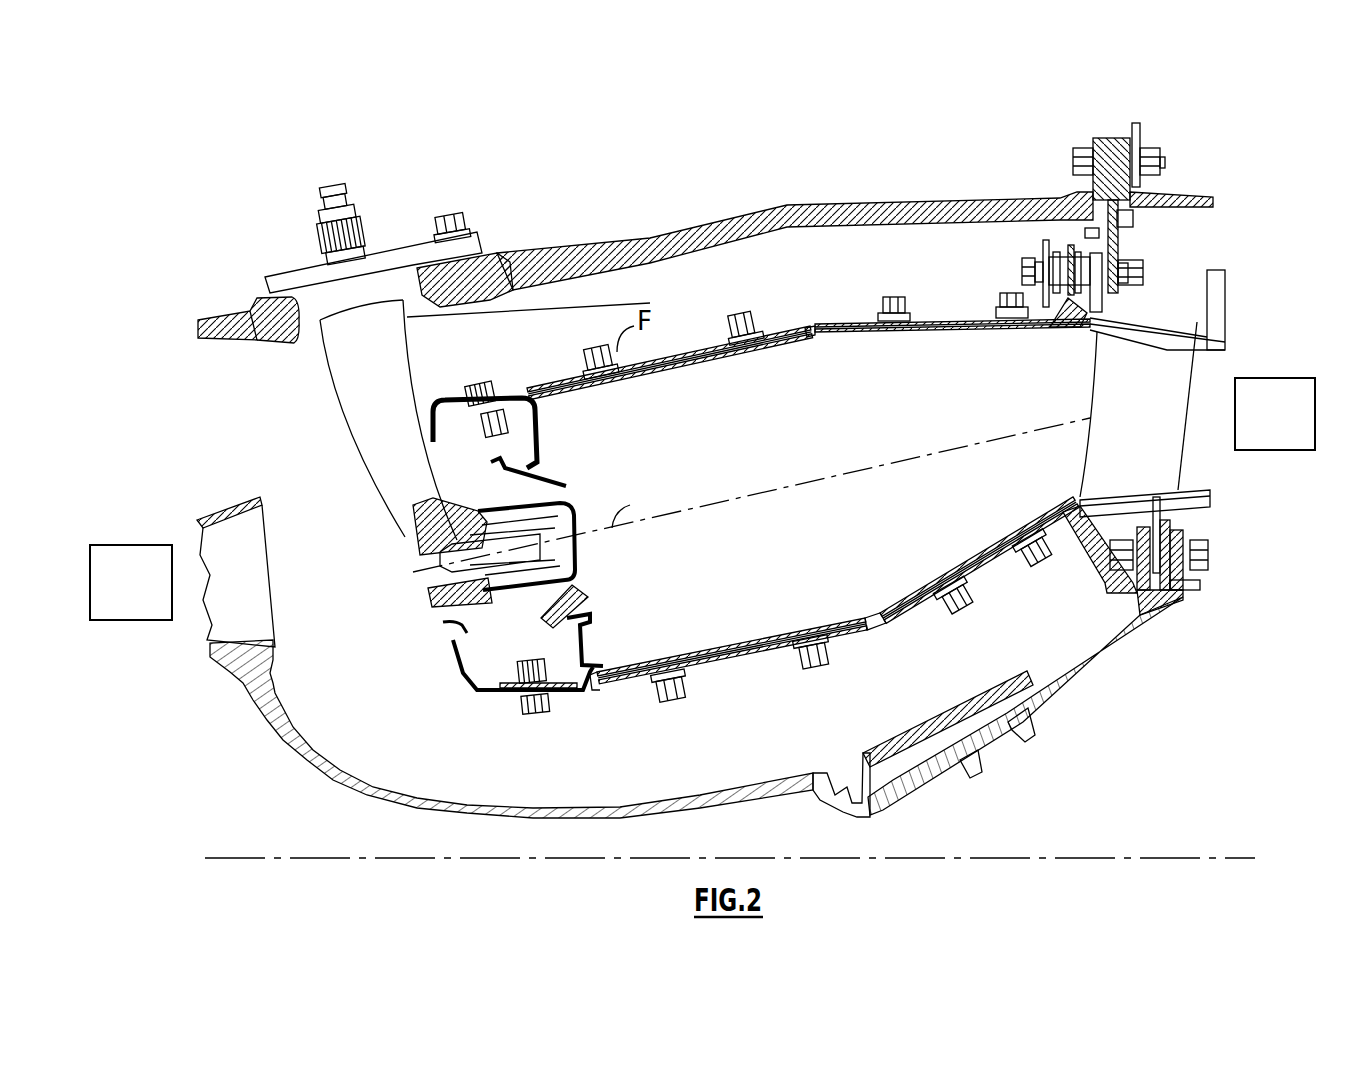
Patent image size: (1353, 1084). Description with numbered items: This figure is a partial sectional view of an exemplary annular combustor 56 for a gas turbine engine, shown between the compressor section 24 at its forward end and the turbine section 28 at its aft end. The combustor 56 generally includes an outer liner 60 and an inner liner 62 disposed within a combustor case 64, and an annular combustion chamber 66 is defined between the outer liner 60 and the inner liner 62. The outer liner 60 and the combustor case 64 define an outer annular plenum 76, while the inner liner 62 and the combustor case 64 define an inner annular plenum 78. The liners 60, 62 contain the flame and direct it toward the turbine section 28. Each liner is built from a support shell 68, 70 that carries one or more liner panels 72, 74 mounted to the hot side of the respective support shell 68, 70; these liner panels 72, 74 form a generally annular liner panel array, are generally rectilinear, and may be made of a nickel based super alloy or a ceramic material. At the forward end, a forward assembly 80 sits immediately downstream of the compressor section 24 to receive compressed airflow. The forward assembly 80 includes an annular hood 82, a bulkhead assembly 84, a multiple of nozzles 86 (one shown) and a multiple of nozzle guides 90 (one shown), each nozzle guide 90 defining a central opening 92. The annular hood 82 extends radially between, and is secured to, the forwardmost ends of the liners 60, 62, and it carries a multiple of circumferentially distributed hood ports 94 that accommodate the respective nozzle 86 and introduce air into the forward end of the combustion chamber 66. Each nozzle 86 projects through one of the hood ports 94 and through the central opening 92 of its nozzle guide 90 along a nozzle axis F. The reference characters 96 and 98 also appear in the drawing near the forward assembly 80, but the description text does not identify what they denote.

The compressor section 24 is at (146, 595).
The turbine section 28 is at (1289, 427).
The combustor 56 is at (838, 150).
The outer liner 60 is at (726, 298).
The inner liner 62 is at (903, 634).
The combustor case 64 is at (998, 198).
The annular combustion chamber 66 is at (841, 493).
The support shell 68 is at (843, 323).
The support shell 70 is at (860, 627).
The liner panel 72 is at (866, 355).
The liner panel 74 is at (905, 560).
The outer annular plenum 76 is at (804, 278).
The inner annular plenum 78 is at (728, 755).
The forward assembly 80 is at (509, 557).
The annular hood 82 is at (465, 685).
The bulkhead assembly 84 is at (565, 441).
The nozzle 86 is at (413, 520).
The nozzle guide 90 is at (598, 596).
The central opening 92 is at (587, 520).
The hood port 94 is at (446, 630).
The liner end 96 is at (592, 690).
The vertical bracket 98 is at (595, 643).